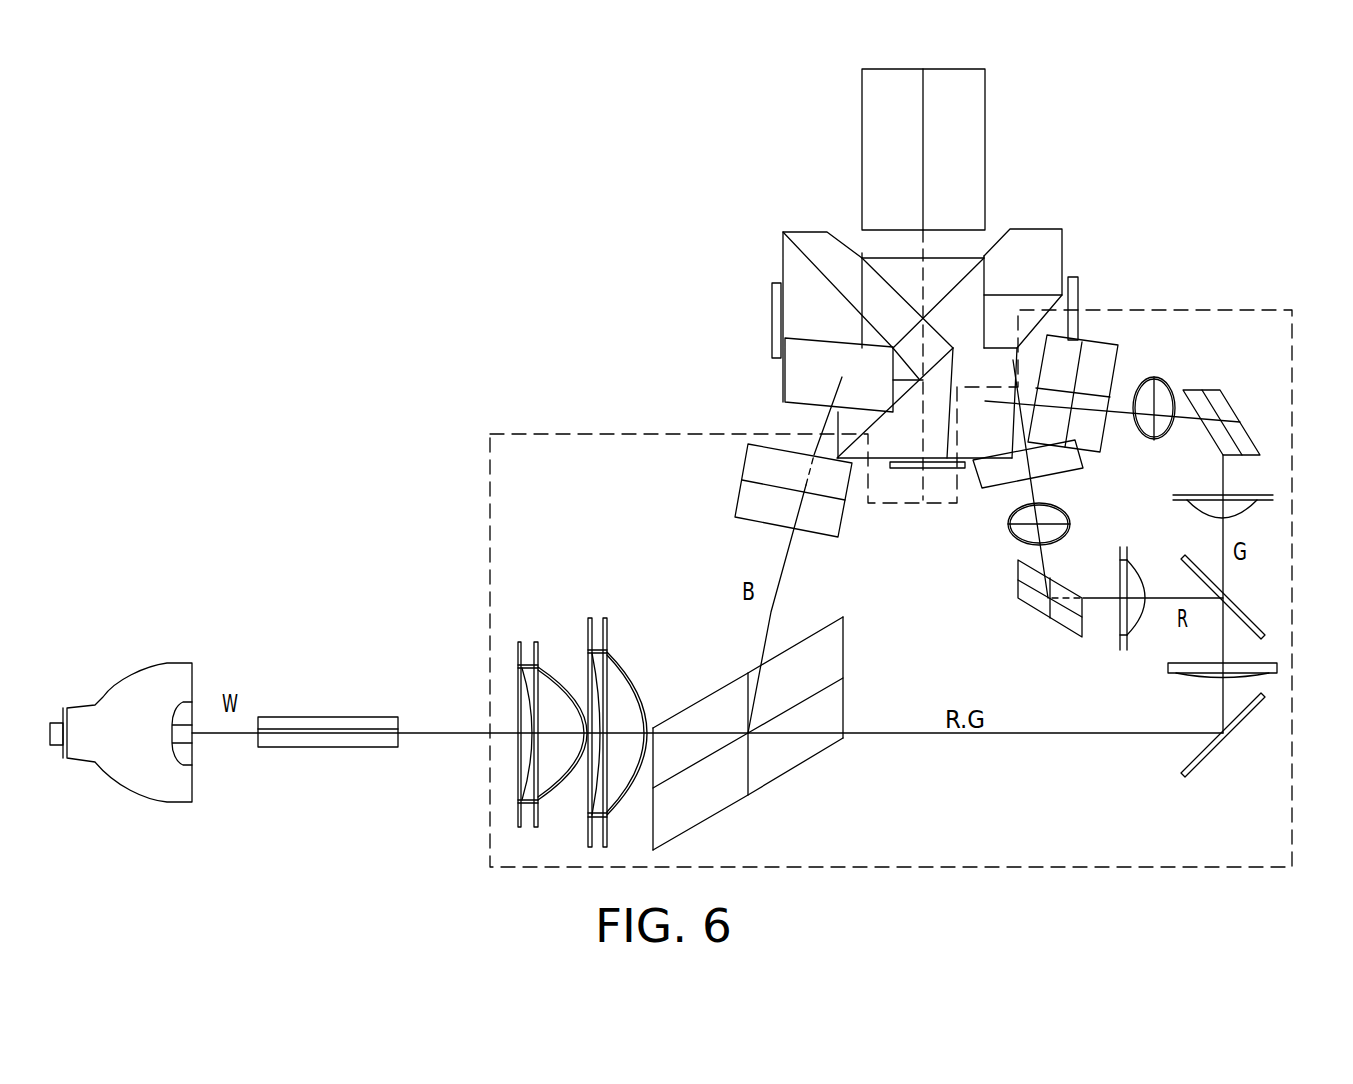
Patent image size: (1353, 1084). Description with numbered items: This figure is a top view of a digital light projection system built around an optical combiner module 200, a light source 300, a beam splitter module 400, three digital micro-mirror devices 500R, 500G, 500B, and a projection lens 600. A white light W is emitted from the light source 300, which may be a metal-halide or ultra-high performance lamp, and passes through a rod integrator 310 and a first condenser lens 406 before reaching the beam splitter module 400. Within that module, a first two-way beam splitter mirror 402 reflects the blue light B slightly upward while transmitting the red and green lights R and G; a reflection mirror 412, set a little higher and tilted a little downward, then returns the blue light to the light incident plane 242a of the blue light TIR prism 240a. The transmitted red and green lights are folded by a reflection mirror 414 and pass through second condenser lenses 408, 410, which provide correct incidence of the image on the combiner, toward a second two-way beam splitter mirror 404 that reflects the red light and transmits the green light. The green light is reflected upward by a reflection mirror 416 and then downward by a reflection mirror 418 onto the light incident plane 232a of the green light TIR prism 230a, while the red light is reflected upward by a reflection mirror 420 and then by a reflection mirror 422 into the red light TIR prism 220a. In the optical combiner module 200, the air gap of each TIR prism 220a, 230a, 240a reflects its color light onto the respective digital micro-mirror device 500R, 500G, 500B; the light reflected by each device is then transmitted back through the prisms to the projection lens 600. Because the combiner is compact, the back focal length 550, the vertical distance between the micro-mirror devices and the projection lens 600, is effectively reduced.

The optical combiner module 200 is at (1053, 197).
The red light TIR prism 220a is at (1062, 245).
The green light TIR prism 230a is at (873, 460).
The light incident plane 232a is at (1027, 447).
The blue light TIR prism 240a is at (783, 252).
The light incident plane 242a is at (793, 388).
The light source 300 is at (150, 800).
The rod integrator 310 is at (335, 747).
The beam splitter module 400 is at (488, 500).
The first two-way beam splitter mirror 402 is at (733, 803).
The second two-way beam splitter mirror 404 is at (1240, 610).
The first condenser lens 406 is at (617, 800).
The second condenser lens 408 is at (1250, 495).
The second condenser lens 410 is at (1117, 622).
The reflection mirror 412 is at (753, 502).
The reflection mirror 414 is at (1207, 753).
The reflection mirror 416 is at (1233, 413).
The reflection mirror 418 is at (1102, 357).
The reflection mirror 420 is at (1032, 602).
The reflection mirror 422 is at (997, 478).
The digital micro-mirror device 500B is at (772, 323).
The digital micro-mirror device 500G is at (923, 470).
The digital micro-mirror device 500R is at (1078, 298).
The back focal length 550 is at (917, 280).
The projection lens 600 is at (987, 136).